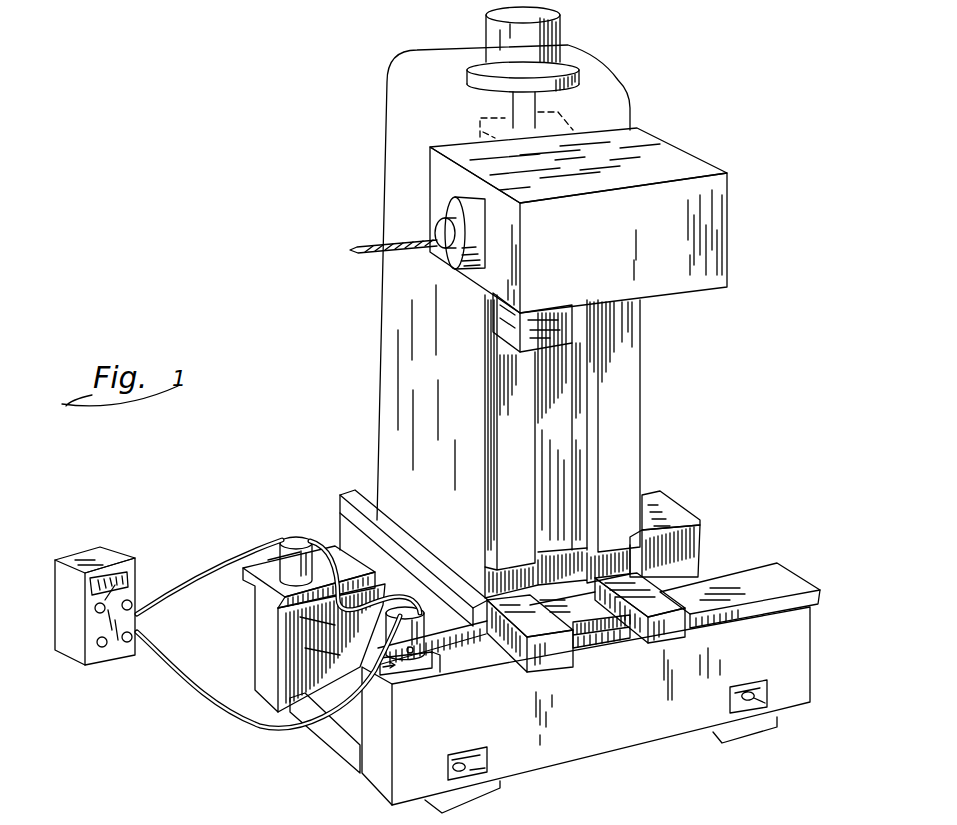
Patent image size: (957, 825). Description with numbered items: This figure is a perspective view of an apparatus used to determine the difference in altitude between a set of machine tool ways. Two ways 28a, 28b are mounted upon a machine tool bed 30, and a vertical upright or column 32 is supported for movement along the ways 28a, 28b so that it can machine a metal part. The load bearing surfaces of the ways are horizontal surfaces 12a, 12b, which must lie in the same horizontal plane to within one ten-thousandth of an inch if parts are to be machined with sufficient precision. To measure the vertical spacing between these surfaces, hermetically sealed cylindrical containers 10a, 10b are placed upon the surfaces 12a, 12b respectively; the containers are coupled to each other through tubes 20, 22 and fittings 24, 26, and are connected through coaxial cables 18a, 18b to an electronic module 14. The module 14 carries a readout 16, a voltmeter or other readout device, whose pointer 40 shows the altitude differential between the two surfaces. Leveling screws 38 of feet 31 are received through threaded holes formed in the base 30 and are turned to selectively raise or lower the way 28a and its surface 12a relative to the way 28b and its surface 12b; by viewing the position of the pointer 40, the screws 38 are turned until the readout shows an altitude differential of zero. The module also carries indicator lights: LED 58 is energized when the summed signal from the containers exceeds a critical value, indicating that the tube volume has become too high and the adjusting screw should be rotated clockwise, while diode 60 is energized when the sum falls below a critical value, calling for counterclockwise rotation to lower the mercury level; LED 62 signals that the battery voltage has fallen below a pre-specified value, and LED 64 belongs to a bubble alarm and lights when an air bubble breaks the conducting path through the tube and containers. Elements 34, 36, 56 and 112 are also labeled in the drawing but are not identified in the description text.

The cylindrical container 10a is at (423, 620).
The cylindrical container 10b is at (284, 538).
The horizontal surface 12a is at (380, 668).
The horizontal surface 12b is at (265, 560).
The electronic module 14 is at (73, 556).
The readout 16 is at (113, 567).
The coaxial cable 18a is at (185, 683).
The coaxial cable 18b is at (213, 562).
The tube 20 is at (300, 617).
The tube 22 is at (400, 548).
The fitting 24 is at (330, 600).
The fitting 26 is at (305, 530).
The way 28a is at (806, 598).
The way 28b is at (704, 524).
The machine tool bed 30 is at (630, 692).
The feet 31 is at (497, 788).
The vertical upright or column 32 is at (388, 114).
The drill bit 34 is at (366, 258).
The chuck 36 is at (468, 243).
The leveling screws 38 is at (467, 755).
The pointer 40 is at (118, 570).
The lead wire 56 is at (305, 648).
The LED 58 is at (95, 608).
The diode 60 is at (132, 603).
The LED 62 is at (98, 647).
The LED 64 is at (123, 642).
The clamp plate 112 is at (438, 672).